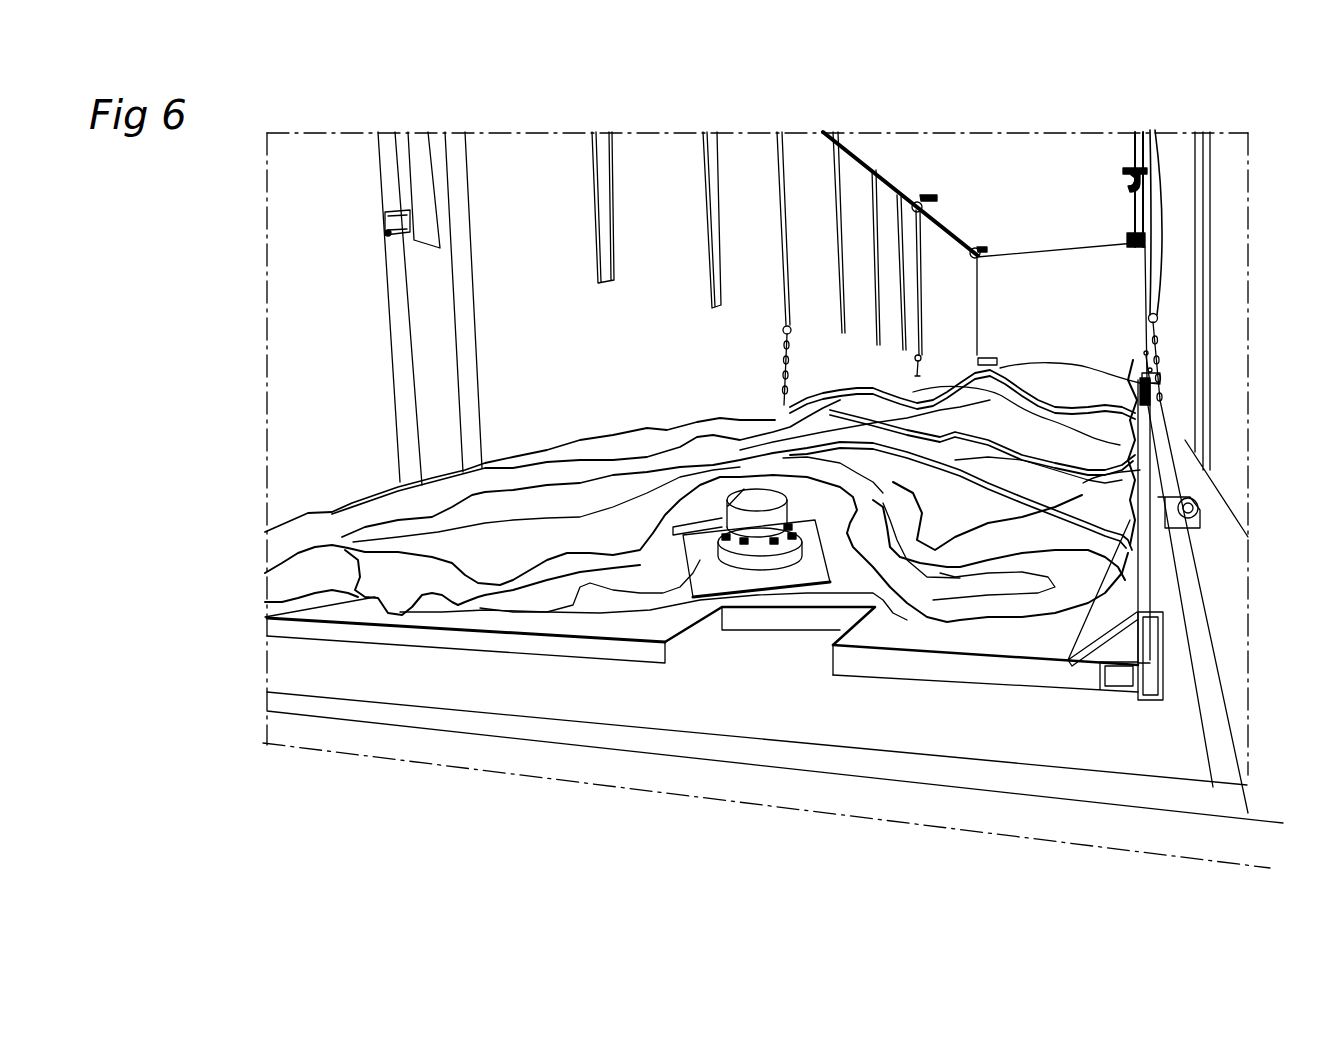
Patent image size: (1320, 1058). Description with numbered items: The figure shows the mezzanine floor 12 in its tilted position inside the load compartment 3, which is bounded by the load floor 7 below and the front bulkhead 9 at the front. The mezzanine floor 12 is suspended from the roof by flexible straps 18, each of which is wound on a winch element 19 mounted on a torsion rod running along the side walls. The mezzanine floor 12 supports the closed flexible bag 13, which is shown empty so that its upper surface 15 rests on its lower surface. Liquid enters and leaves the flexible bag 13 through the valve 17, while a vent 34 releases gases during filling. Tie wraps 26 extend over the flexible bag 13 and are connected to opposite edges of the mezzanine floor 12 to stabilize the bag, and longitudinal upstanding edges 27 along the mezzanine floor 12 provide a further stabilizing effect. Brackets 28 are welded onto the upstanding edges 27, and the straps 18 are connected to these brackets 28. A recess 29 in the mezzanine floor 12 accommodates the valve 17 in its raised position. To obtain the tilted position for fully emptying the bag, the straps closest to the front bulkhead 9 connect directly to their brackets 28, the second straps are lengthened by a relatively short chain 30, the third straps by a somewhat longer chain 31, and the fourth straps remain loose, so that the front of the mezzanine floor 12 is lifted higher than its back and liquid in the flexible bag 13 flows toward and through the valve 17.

The load compartment 3 is at (1117, 283).
The load floor 7 is at (998, 723).
The front bulkhead 9 is at (1055, 270).
The mezzanine floor 12 is at (1160, 712).
The flexible bag 13 is at (1072, 570).
The upper surface 15 is at (1200, 506).
The valve 17 is at (773, 555).
The flexible straps 18 is at (390, 180).
The winch element 19 is at (1140, 245).
The tie wraps 26 is at (1135, 440).
The longitudinal upstanding edges 27 is at (1148, 593).
The brackets 28 is at (1120, 467).
The recess 29 is at (747, 620).
The chain 30 is at (923, 373).
The chain 31 is at (778, 363).
The vent 34 is at (988, 358).